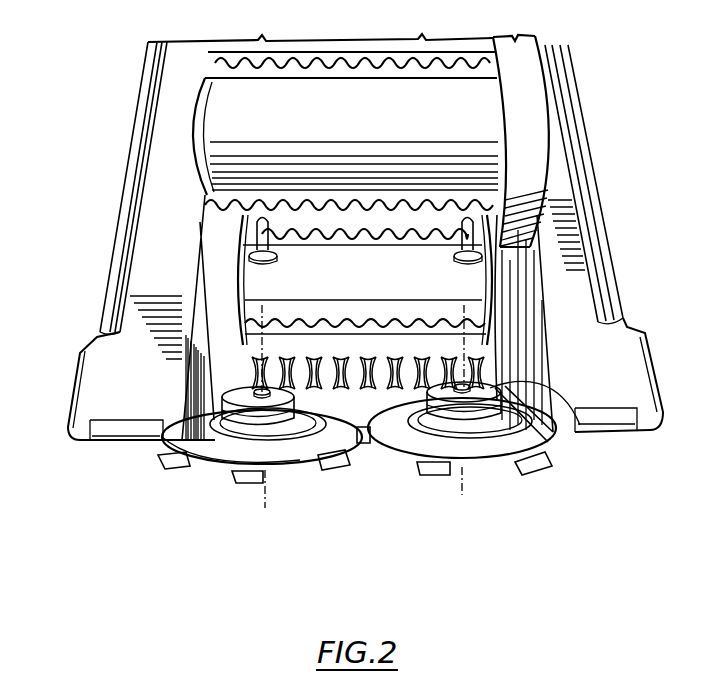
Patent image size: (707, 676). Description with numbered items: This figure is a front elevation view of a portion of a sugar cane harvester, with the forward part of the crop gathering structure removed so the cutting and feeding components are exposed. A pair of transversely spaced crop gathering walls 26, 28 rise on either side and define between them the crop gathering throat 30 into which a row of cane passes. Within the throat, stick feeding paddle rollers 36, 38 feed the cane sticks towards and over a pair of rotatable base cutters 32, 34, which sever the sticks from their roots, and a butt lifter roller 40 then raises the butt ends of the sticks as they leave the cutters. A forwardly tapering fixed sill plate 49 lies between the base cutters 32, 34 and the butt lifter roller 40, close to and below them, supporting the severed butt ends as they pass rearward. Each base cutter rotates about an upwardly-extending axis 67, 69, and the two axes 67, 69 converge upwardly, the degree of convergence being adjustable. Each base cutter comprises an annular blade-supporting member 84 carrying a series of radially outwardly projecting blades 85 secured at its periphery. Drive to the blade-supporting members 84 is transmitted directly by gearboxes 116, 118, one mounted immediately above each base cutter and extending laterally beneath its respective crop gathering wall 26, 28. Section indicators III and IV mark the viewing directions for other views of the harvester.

The crop gathering wall 26 is at (525, 333).
The crop gathering wall 28 is at (193, 302).
The crop gathering throat 30 is at (352, 472).
The base cutter 32 is at (507, 462).
The base cutter 34 is at (208, 467).
The paddle roller 36 is at (490, 132).
The paddle roller 38 is at (260, 290).
The butt lifter roller 40 is at (357, 325).
The sill plate 49 is at (360, 447).
The axis 67 is at (465, 475).
The axis 69 is at (290, 490).
The annular blade-supporting member 84 is at (305, 452).
The blade 85 is at (170, 459).
The gearbox 116 is at (570, 420).
The gearbox 118 is at (238, 450).
The section line III is at (77, 333).
The section line IV is at (520, 372).